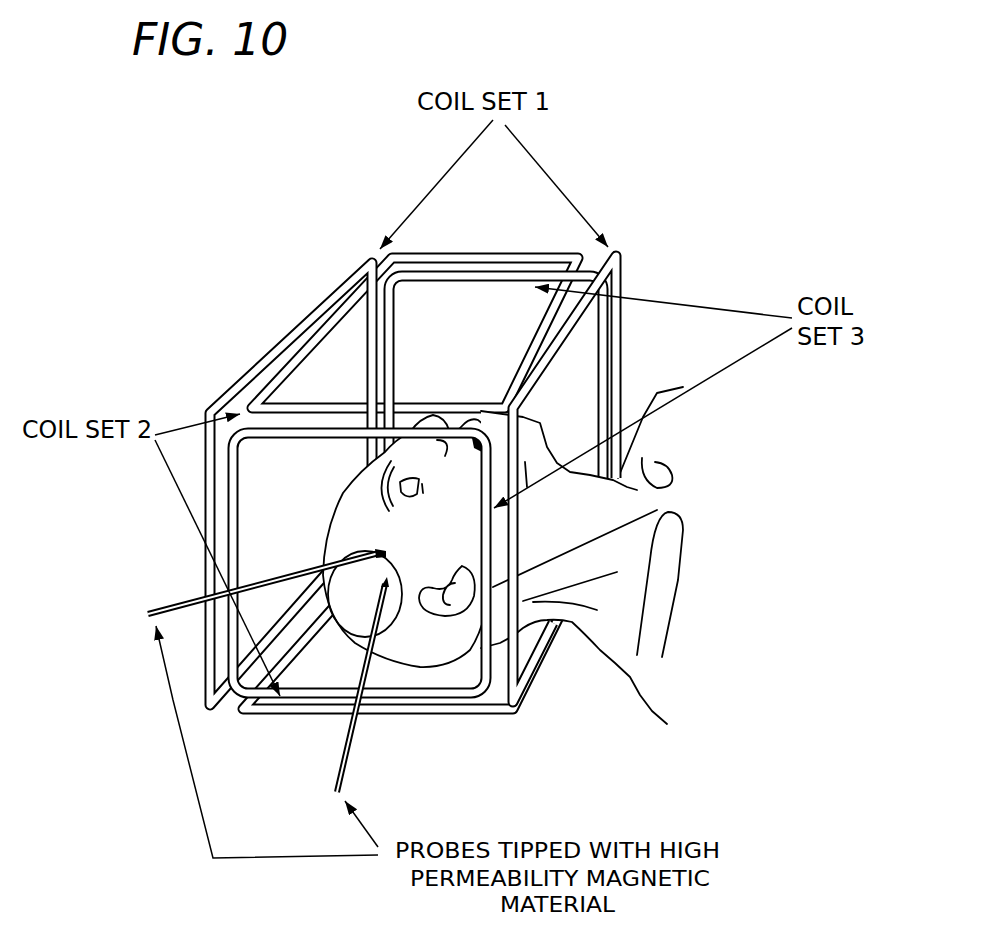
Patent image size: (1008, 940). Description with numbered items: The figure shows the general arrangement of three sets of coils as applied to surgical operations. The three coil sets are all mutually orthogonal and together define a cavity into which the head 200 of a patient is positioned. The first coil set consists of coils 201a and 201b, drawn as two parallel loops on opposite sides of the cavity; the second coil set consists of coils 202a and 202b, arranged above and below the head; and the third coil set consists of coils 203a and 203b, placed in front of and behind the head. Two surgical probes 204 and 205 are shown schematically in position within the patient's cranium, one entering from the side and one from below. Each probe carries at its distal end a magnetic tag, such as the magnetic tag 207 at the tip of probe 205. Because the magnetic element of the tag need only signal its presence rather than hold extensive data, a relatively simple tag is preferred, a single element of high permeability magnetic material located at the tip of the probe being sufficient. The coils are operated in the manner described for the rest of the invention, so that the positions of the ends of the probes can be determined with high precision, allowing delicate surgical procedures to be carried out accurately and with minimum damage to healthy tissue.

The head 200 is at (447, 649).
The coil 201a is at (302, 322).
The coil 201b is at (620, 326).
The coil 202a is at (490, 252).
The coil 202b is at (282, 714).
The coil 203a is at (236, 482).
The coil 203b is at (598, 369).
The surgical probe 204 is at (162, 601).
The surgical probe 205 is at (343, 786).
The magnetic tag 207 is at (398, 598).